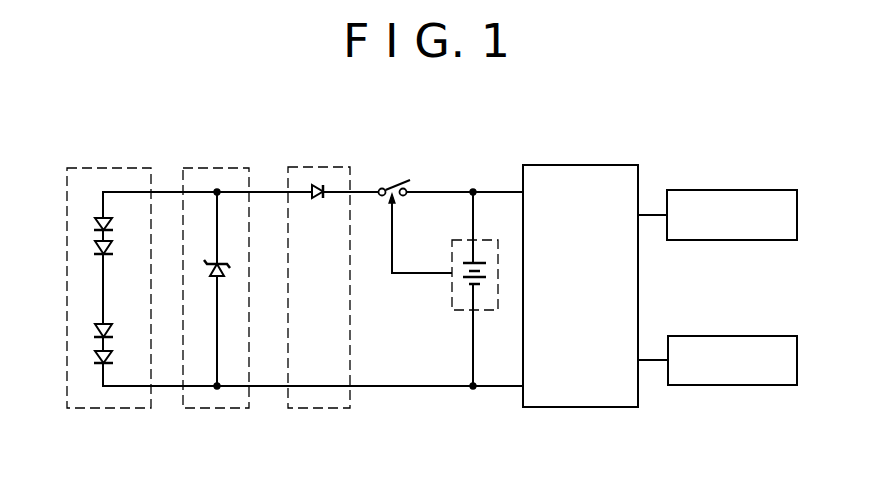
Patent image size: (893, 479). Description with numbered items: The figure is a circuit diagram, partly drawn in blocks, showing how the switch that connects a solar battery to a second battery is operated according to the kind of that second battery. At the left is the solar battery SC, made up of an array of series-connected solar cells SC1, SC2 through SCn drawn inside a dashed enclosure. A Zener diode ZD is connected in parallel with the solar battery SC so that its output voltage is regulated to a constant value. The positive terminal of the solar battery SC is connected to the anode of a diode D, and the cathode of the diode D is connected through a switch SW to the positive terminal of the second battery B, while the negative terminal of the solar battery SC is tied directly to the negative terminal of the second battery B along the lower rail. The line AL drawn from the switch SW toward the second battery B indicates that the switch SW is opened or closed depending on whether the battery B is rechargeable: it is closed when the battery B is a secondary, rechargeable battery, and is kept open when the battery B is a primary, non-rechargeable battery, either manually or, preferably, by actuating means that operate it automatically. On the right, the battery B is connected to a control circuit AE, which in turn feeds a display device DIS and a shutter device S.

The solar battery SC is at (120, 168).
The solar cell SC1 is at (109, 225).
The solar cell SC2 is at (112, 247).
The solar cell SCn is at (110, 360).
The Zener diode ZD is at (222, 269).
The diode D is at (314, 200).
The switch SW is at (398, 183).
The line AL is at (405, 278).
The second battery B is at (486, 243).
The control circuit AE is at (541, 165).
The display device DIS is at (683, 190).
The shutter device S is at (733, 336).